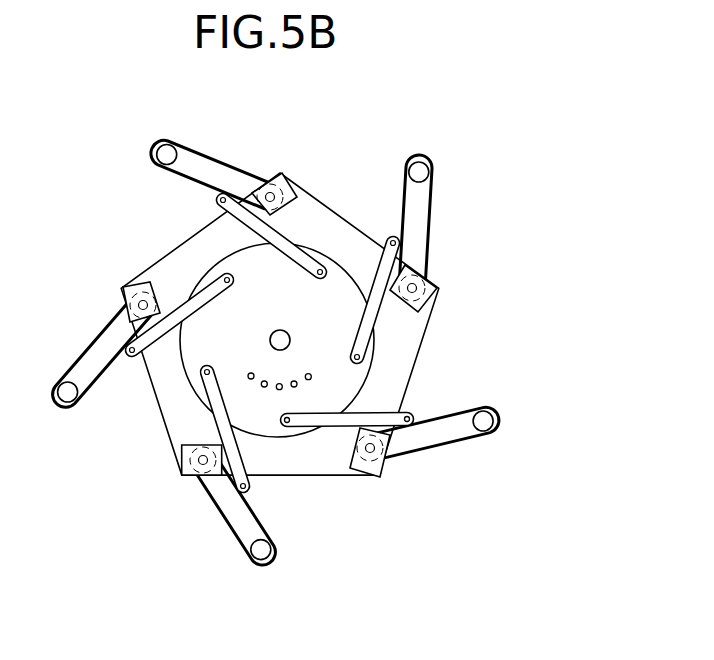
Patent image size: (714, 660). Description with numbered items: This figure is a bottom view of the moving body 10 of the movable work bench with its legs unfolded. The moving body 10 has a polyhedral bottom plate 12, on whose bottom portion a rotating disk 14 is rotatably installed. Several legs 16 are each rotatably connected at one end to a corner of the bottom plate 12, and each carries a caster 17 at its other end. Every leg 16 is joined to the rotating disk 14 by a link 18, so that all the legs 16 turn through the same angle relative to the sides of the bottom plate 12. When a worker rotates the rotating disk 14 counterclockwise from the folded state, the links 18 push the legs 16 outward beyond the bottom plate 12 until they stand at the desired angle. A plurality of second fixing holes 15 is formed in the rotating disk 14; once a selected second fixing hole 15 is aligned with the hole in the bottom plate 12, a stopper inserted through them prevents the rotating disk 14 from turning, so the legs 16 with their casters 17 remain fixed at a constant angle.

The moving body 10 is at (326, 155).
The bottom plate 12 is at (177, 403).
The rotating disk 14 is at (242, 267).
The second fixing holes 15 is at (313, 377).
The legs 16 is at (428, 435).
The caster 17 is at (497, 431).
The links 18 is at (340, 417).